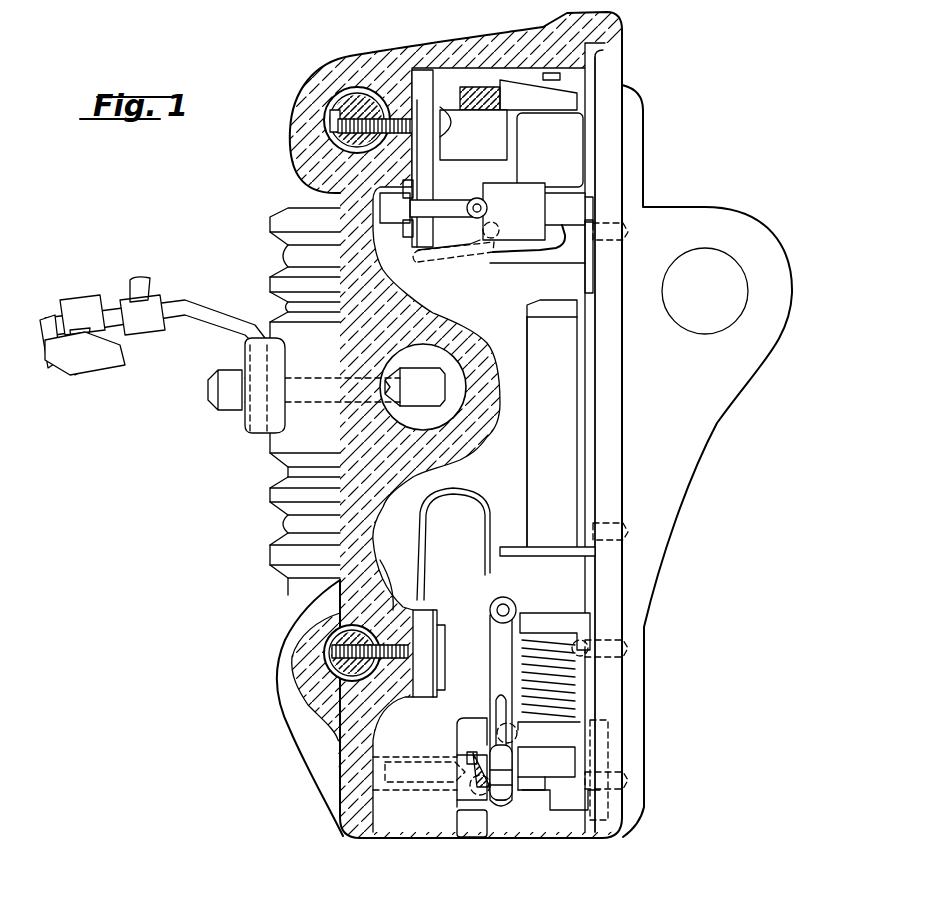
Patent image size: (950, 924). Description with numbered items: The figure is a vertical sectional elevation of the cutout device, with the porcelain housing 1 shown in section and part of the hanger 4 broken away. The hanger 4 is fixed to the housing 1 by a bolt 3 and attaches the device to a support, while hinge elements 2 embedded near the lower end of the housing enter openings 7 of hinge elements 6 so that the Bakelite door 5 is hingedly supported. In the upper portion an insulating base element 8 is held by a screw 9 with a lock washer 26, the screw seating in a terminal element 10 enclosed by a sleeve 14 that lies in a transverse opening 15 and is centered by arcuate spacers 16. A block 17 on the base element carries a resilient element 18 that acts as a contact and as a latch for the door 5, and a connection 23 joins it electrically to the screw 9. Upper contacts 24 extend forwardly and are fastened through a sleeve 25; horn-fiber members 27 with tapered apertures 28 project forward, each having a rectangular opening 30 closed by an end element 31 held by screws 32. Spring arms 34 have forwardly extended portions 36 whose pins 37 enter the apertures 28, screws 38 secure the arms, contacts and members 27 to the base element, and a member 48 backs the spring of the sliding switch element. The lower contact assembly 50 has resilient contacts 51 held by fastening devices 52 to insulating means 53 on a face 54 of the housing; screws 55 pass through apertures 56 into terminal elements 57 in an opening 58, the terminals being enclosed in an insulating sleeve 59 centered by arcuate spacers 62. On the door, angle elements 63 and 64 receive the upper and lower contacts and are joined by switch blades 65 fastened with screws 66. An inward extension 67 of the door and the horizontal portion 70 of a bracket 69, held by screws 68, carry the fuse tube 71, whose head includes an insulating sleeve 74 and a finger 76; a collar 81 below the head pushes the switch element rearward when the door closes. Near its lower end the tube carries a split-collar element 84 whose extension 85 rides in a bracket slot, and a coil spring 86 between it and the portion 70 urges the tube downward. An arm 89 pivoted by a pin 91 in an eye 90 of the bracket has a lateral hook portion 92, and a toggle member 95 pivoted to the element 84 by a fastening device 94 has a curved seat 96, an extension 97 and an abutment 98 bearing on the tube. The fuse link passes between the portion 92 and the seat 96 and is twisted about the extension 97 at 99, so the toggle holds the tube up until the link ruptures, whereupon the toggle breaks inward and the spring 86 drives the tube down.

The housing 1 is at (457, 47).
The hinge elements 2 is at (460, 802).
The bolt 3 is at (431, 388).
The hanger 4 is at (191, 307).
The door 5 is at (644, 368).
The hinge elements 6 is at (585, 825).
The openings 7 is at (563, 805).
The base element 8 is at (431, 175).
The screw 9 is at (460, 131).
The terminal element 10 is at (350, 105).
The sleeve 14 is at (331, 91).
The opening 15 is at (328, 139).
The arcuate spacers 16 is at (387, 95).
The block 17 is at (498, 129).
The resilient element 18 is at (563, 100).
The connection 23 is at (470, 120).
The upper contacts 24 is at (527, 266).
The sleeve 25 is at (427, 80).
The lock washer 26 is at (457, 151).
The members 27 is at (476, 275).
The apertures 28 is at (480, 198).
The rectangular opening 30 is at (510, 193).
The end element 31 is at (532, 183).
The screws 32 is at (528, 200).
The spring arms 34 is at (430, 204).
The forwardly extended portions 36 is at (468, 255).
The pins 37 is at (494, 229).
The screws 38 is at (396, 208).
The member 48 is at (385, 224).
The lower contact assembly 50 is at (447, 598).
The resilient contacts 51 is at (478, 498).
The fastening devices 52 is at (445, 640).
The insulating means 53 is at (420, 690).
The face 54 is at (408, 630).
The screws 55 is at (405, 700).
The apertures 56 is at (337, 740).
The terminal elements 57 is at (335, 633).
The opening 58 is at (325, 673).
The insulating sleeve 59 is at (290, 735).
The arcuate spacers 62 is at (392, 595).
The angle elements 63 is at (590, 272).
The angle elements 64 is at (540, 553).
The switch blades 65 is at (577, 408).
The screws 66 is at (625, 245).
The extension 67 is at (548, 293).
The screws 68 is at (613, 675).
The bracket 69 is at (598, 800).
The horizontal portion 70 is at (542, 620).
The tube 71 is at (527, 455).
The sleeve 74 is at (590, 165).
The finger 76 is at (560, 80).
The collar 81 is at (590, 201).
The element 84 is at (553, 745).
The extension 85 is at (612, 740).
The coil spring 86 is at (492, 685).
The arm 89 is at (454, 707).
The eye portion 90 is at (490, 608).
The pin 91 is at (507, 604).
The laterally extended portion 92 is at (500, 822).
The fastening device 94 is at (517, 733).
The toggle member 95 is at (540, 792).
The curved seat 96 is at (470, 800).
The extension 97 is at (465, 760).
The abutment 98 is at (512, 795).
The twisted fuse link end 99 is at (468, 752).